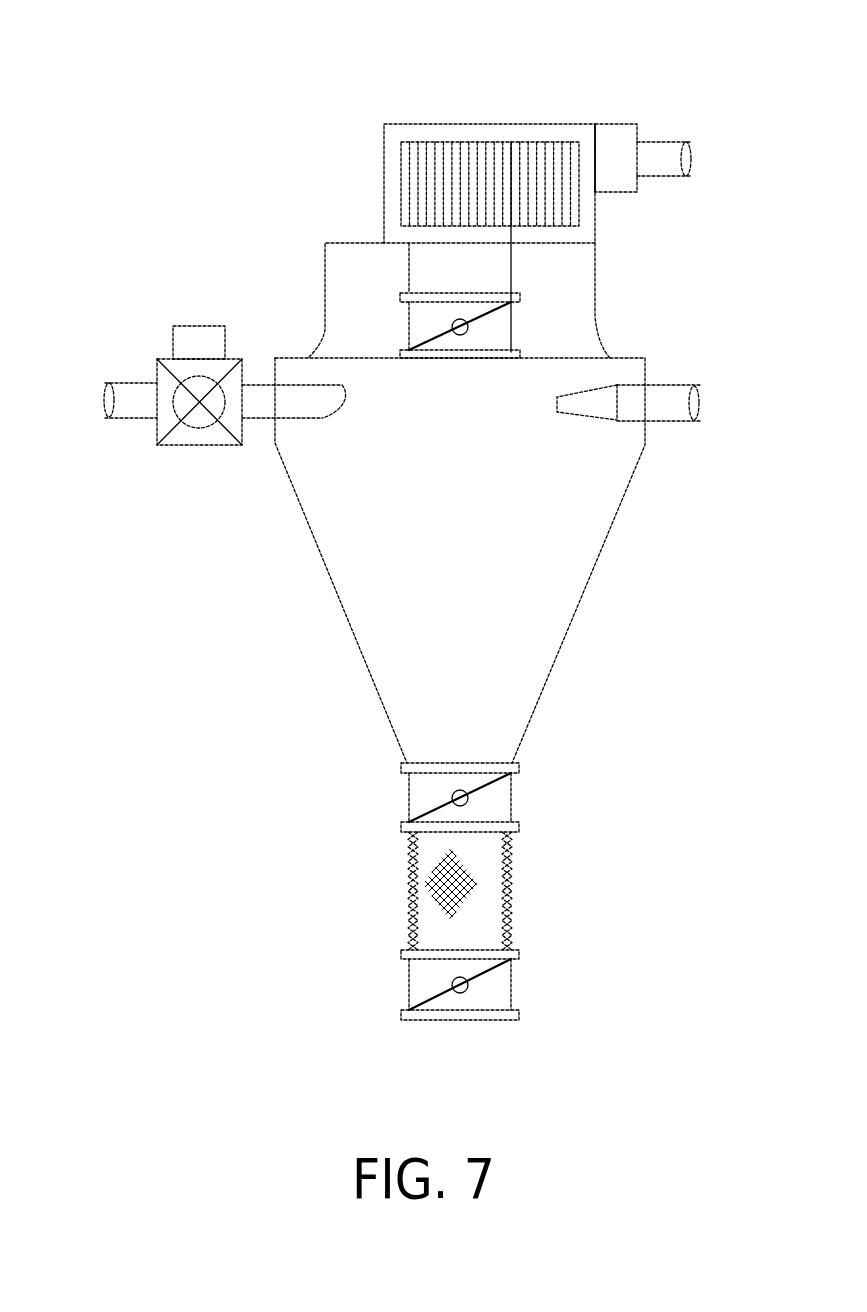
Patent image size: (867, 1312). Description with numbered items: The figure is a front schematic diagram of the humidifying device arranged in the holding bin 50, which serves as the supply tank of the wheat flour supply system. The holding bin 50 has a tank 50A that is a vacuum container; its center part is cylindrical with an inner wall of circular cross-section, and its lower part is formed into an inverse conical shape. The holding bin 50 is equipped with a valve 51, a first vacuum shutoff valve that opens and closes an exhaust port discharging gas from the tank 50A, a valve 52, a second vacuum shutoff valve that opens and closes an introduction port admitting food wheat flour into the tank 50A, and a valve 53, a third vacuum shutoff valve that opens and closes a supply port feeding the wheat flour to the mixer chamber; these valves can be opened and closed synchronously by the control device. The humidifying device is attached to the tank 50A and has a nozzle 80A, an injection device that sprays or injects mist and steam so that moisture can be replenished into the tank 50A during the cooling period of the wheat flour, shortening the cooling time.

The holding bin 50 is at (411, 518).
The tank 50A is at (590, 560).
The valve 51 is at (412, 325).
The valve 52 is at (167, 357).
The valve 53 is at (417, 799).
The nozzle 80A is at (597, 417).